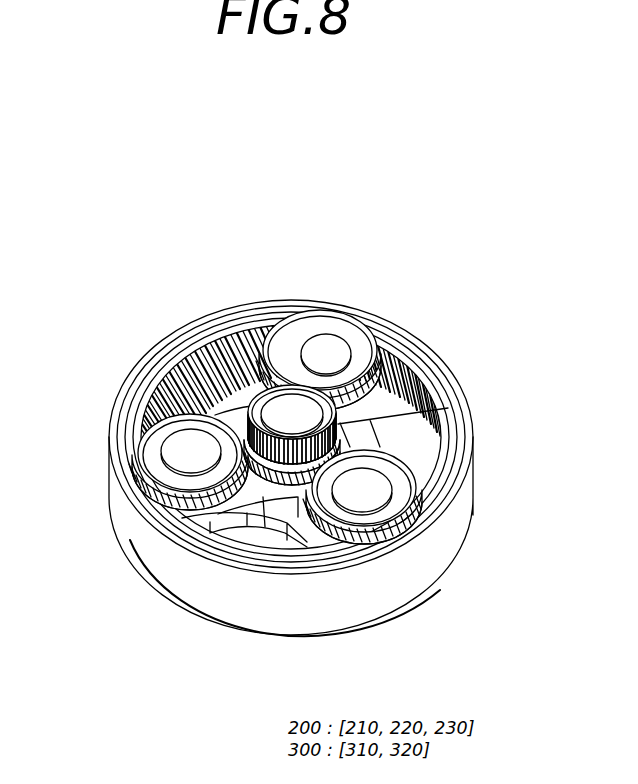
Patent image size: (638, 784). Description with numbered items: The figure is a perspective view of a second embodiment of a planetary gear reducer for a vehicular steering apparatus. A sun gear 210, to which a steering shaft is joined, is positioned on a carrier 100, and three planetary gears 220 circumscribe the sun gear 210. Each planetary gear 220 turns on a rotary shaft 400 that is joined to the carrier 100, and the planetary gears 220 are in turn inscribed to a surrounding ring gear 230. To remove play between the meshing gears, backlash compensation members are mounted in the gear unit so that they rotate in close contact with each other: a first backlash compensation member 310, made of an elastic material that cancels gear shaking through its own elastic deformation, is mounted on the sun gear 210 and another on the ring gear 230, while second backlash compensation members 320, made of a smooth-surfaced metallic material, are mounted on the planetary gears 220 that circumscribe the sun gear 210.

The carrier 100 is at (295, 518).
The sun gear 210 is at (258, 510).
The planetary gear 220 is at (145, 451).
The ring gear 230 is at (188, 588).
The first backlash compensation member 310 is at (468, 432).
The second backlash compensation member 320 is at (466, 486).
The rotary shaft 400 is at (366, 494).